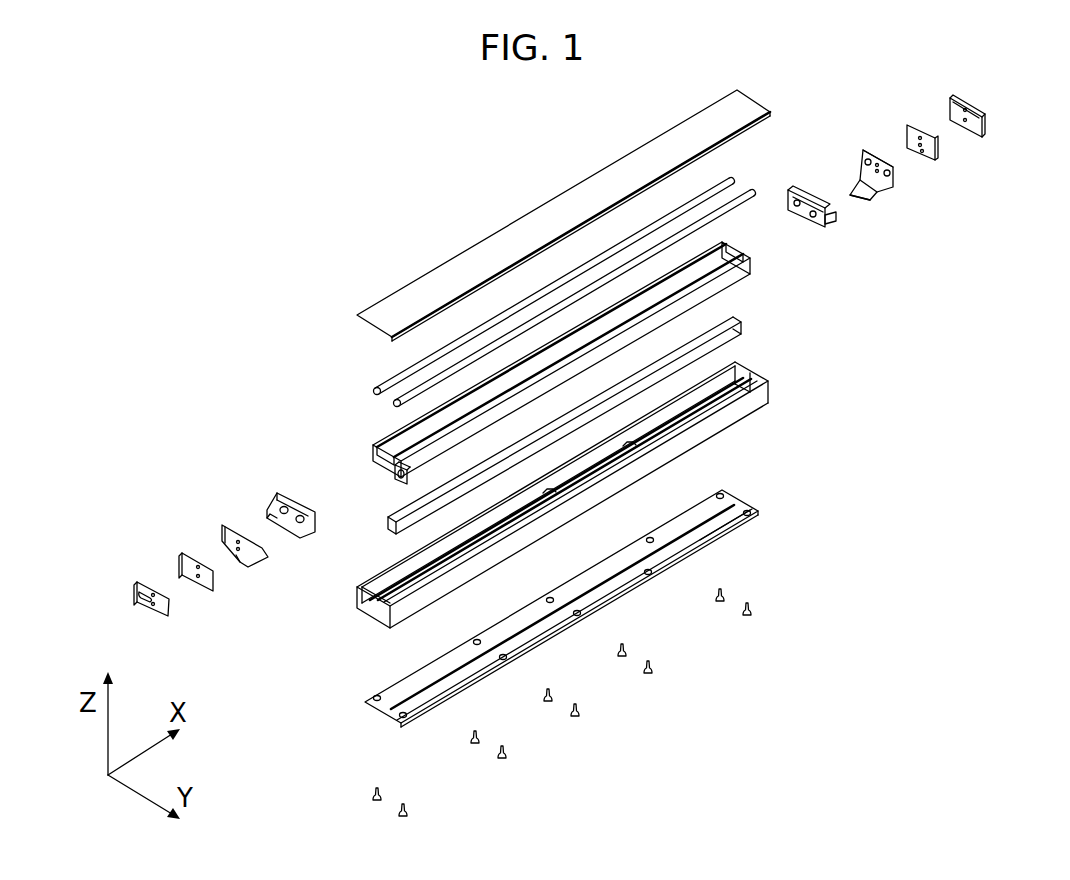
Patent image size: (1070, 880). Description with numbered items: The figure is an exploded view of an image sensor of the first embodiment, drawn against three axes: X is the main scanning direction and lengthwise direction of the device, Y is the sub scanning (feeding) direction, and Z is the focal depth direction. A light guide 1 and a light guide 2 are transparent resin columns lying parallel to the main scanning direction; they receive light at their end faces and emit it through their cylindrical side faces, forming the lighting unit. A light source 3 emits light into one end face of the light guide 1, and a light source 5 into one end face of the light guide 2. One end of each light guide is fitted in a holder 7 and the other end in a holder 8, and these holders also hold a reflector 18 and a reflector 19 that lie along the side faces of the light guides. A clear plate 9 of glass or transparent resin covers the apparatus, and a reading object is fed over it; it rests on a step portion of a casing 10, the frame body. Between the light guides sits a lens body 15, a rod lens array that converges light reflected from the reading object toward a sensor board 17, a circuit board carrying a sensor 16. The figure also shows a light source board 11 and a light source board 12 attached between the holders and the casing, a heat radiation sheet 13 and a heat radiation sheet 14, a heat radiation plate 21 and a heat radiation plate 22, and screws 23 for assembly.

The light guide 1 is at (374, 390).
The light guide 2 is at (394, 403).
The light source 3 is at (862, 150).
The light source 5 is at (886, 160).
The holder 7 is at (827, 224).
The holder 8 is at (275, 493).
The clear plate 9 is at (390, 300).
The casing 10 is at (365, 609).
The light source board 11 is at (870, 198).
The light source board 12 is at (222, 525).
The heat radiation sheet 13 is at (937, 157).
The heat radiation sheet 14 is at (181, 552).
The lens body 15 is at (725, 335).
The sensor 16 is at (775, 547).
The sensor board 17 is at (680, 547).
The reflector 18 is at (377, 453).
The reflector 19 is at (403, 481).
The heat radiation plate 21 is at (983, 133).
The heat radiation plate 22 is at (143, 585).
The screw 23 is at (755, 612).